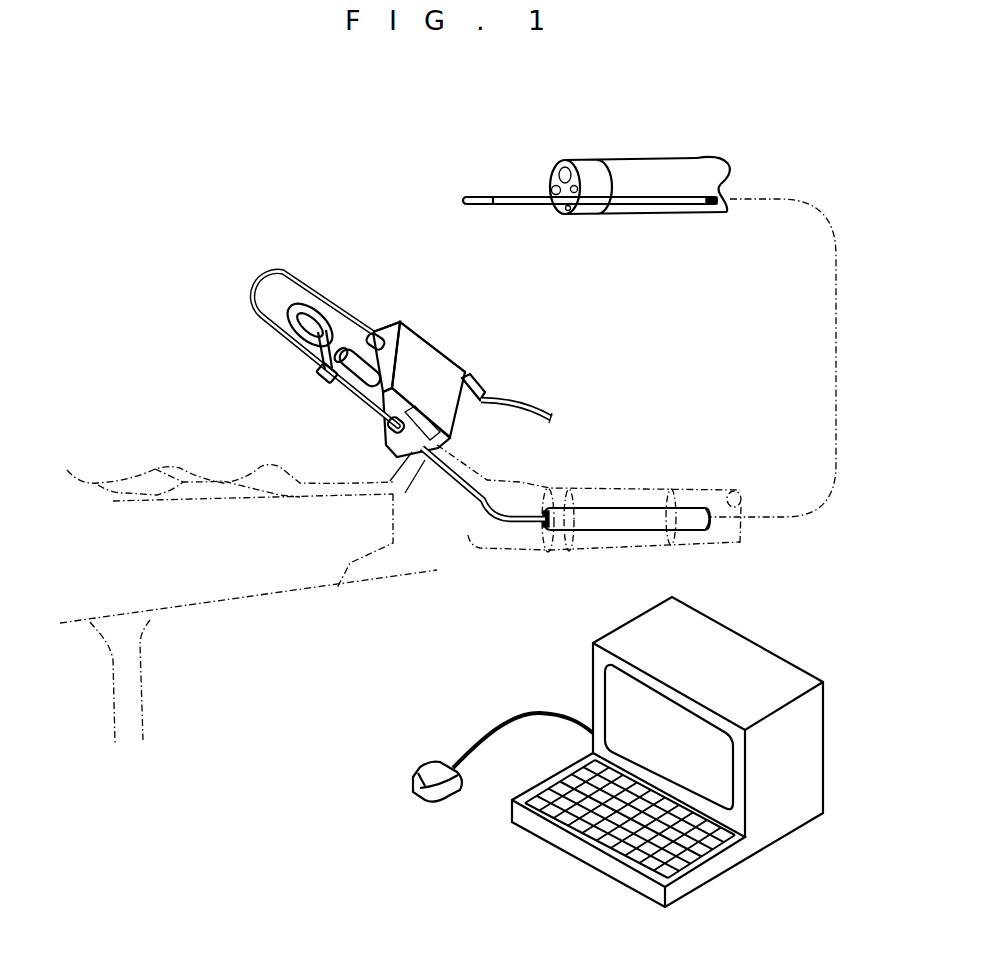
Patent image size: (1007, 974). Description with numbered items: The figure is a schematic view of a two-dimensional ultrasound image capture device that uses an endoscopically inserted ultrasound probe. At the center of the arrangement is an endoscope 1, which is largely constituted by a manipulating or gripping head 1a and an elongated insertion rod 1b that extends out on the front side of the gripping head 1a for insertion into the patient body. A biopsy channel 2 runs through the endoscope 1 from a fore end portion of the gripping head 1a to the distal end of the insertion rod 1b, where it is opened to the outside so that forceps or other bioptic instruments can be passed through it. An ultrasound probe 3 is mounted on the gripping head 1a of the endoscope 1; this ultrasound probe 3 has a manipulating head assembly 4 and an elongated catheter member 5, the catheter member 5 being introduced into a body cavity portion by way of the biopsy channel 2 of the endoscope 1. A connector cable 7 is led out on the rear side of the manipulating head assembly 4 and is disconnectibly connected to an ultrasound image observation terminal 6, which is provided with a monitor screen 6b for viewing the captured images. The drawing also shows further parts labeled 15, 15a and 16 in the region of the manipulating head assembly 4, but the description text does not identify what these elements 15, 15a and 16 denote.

The endoscope 1 is at (336, 600).
The gripping head 1a is at (210, 588).
The insertion rod 1b is at (645, 158).
The biopsy channel 2 is at (633, 517).
The ultrasound probe 3 is at (470, 362).
The manipulating head assembly 4 is at (403, 337).
The catheter member 5 is at (483, 503).
The ultrasound image observation terminal 6 is at (619, 719).
The monitor screen 6b is at (618, 705).
The connector cable 7 is at (523, 408).
The guide rod 15 is at (343, 345).
The loop portion 15a is at (311, 285).
The ring 16 is at (320, 378).